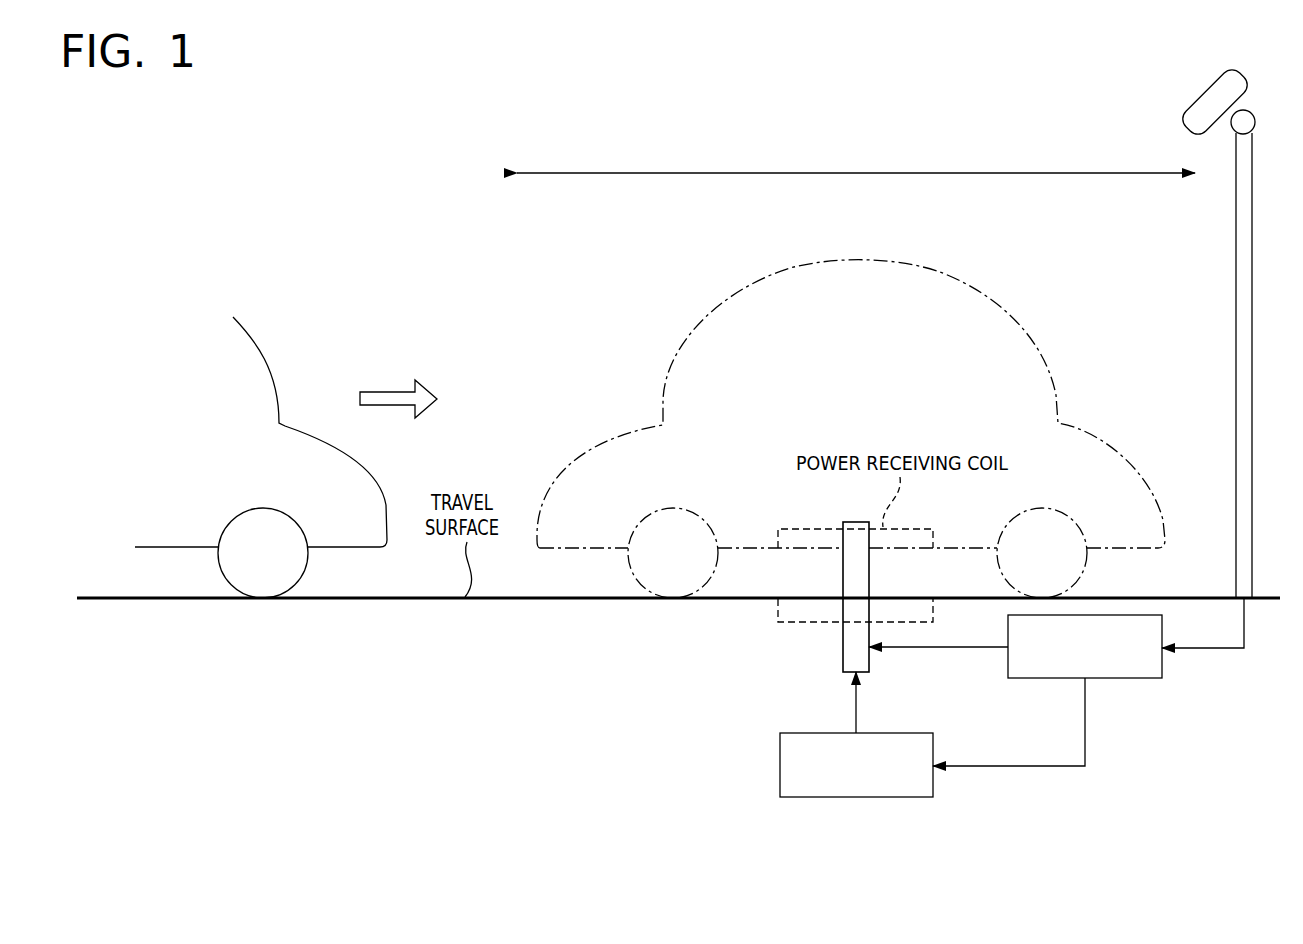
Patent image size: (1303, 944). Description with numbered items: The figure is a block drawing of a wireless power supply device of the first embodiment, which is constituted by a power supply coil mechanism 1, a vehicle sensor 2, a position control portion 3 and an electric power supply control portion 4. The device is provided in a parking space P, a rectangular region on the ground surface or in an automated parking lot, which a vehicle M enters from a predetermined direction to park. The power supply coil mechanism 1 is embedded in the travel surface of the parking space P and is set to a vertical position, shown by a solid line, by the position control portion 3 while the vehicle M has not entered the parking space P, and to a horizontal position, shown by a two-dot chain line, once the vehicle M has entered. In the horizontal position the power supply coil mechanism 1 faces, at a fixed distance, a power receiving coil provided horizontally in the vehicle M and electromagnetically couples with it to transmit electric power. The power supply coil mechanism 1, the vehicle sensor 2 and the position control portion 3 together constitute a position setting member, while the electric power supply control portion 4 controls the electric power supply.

The power supply coil mechanism 1 is at (845, 650).
The vehicle sensor 2 is at (1210, 95).
The position control portion 3 is at (1118, 680).
The electric power supply control portion 4 is at (780, 768).
The vehicle M is at (262, 352).
The parking space P is at (856, 159).